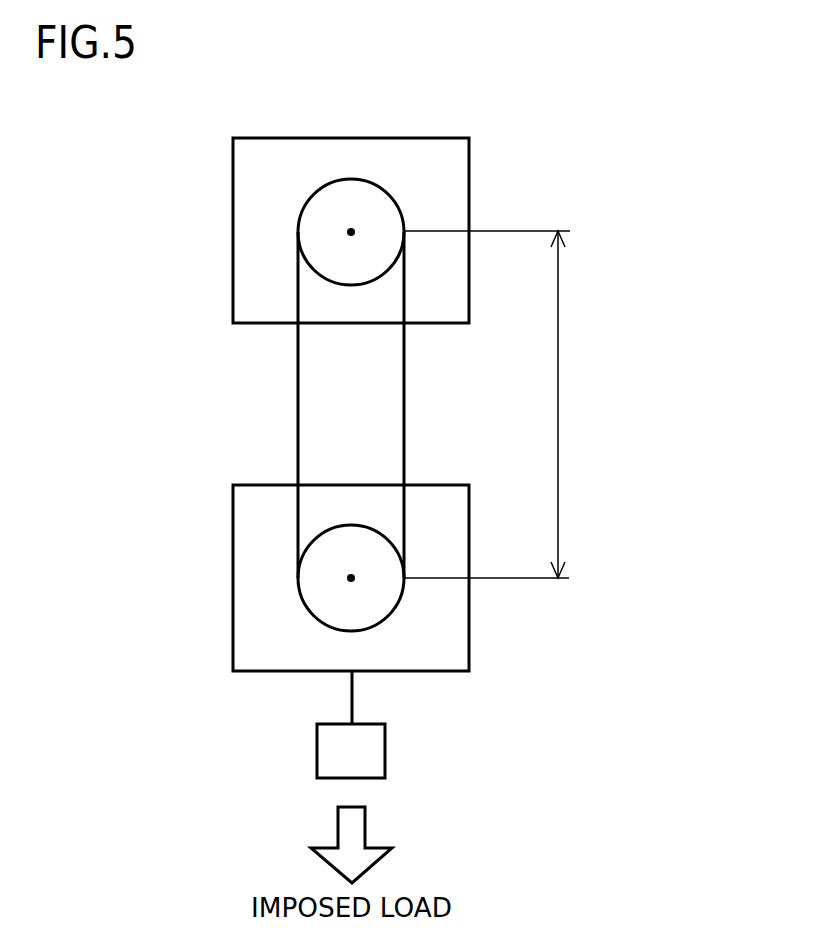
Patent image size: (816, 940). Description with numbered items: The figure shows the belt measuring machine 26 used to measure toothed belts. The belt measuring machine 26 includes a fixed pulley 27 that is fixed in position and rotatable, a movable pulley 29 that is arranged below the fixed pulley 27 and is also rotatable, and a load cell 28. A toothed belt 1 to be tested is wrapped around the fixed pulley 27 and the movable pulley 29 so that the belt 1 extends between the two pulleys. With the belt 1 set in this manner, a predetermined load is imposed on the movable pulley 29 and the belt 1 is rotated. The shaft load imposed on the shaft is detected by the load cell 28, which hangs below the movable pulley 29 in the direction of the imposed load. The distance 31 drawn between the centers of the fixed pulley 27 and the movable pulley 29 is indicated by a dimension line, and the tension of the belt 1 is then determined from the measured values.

The belt 1 is at (298, 405).
The belt measuring machine 26 is at (605, 208).
The fixed pulley 27 is at (378, 202).
The load cell 28 is at (385, 750).
The movable pulley 29 is at (383, 596).
The center distance between pulleys 31 is at (558, 398).